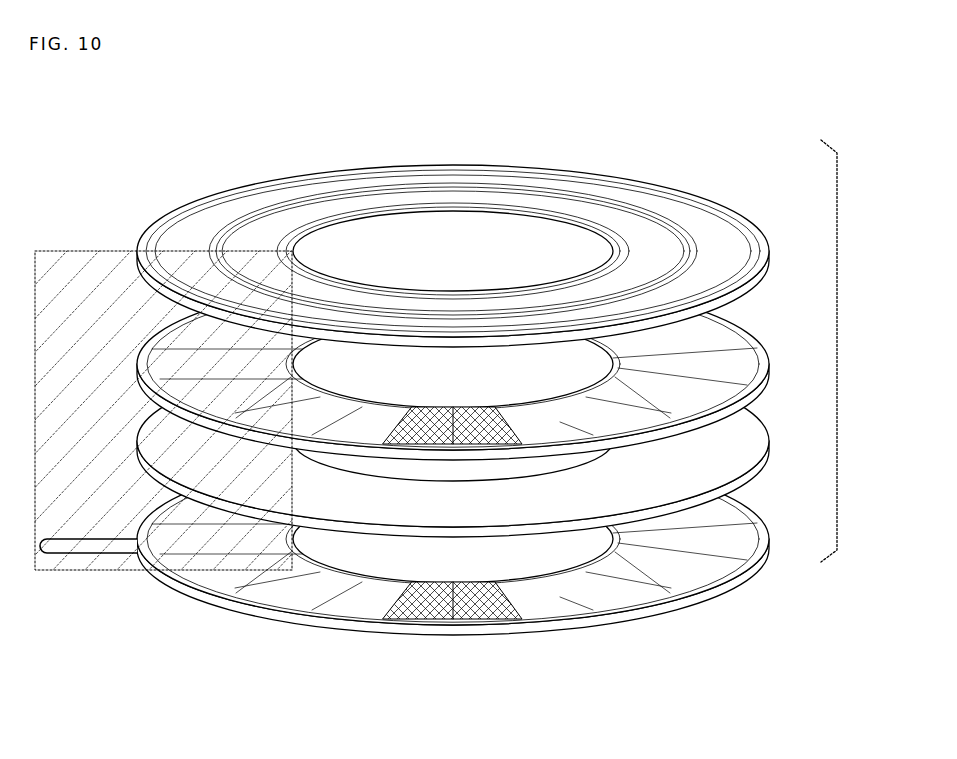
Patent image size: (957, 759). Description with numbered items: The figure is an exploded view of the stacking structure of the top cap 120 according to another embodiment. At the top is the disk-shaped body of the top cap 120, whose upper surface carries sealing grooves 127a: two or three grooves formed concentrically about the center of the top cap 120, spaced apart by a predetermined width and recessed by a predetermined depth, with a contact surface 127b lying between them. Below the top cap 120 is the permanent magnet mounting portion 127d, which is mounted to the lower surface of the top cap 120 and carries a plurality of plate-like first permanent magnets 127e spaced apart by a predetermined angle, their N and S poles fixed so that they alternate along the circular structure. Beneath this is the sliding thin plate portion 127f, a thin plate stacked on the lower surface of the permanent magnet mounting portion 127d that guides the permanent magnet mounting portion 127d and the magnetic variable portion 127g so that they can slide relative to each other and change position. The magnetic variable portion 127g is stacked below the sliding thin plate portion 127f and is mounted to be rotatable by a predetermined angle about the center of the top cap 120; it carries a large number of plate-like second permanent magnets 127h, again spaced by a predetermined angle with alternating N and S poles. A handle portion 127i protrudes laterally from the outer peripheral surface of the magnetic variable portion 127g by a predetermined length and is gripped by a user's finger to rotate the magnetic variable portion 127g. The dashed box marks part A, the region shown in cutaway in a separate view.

The top cap 120 is at (838, 351).
The sealing groove 127a is at (607, 224).
The contact surface 127b is at (637, 228).
The permanent magnet mounting portion 127d is at (760, 332).
The first permanent magnet 127e is at (452, 405).
The sliding thin plate portion 127f is at (755, 435).
The magnetic variable portion 127g is at (755, 525).
The second permanent magnet 127h is at (452, 580).
The handle portion 127i is at (90, 555).
The part A is at (88, 251).